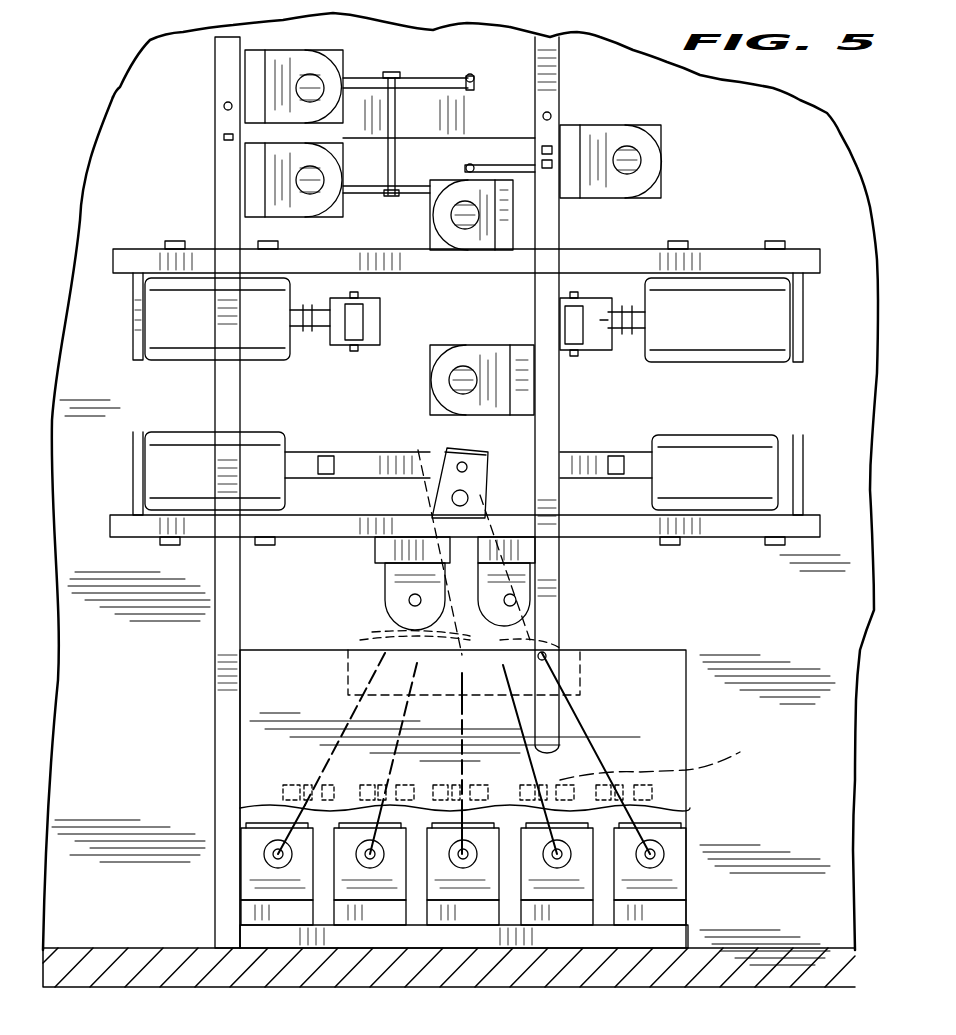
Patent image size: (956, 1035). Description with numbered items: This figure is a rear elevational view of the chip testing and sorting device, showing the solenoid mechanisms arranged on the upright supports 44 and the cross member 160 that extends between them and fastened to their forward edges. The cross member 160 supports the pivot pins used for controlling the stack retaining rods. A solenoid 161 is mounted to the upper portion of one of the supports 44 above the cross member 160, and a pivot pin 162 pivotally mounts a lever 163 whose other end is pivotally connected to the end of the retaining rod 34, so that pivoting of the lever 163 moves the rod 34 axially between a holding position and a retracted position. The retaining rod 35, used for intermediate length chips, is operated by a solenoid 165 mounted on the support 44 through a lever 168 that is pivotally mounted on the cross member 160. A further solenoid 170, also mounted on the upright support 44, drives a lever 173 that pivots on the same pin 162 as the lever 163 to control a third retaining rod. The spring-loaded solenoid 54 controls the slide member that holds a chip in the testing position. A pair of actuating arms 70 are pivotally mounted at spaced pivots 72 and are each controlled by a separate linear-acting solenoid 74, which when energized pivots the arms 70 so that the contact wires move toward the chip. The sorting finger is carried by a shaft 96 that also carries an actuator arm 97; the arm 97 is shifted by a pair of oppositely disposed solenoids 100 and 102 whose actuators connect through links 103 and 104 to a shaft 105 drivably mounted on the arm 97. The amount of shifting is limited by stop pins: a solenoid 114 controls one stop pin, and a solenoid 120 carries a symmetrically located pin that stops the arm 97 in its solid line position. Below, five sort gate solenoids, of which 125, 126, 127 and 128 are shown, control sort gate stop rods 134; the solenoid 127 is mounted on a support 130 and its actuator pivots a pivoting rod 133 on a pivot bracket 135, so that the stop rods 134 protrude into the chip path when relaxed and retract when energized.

The stack retaining rod 34 is at (472, 76).
The retaining rod 35 is at (465, 169).
The upright supports 44 is at (228, 693).
The solenoid 54 is at (449, 381).
The actuating arms 70 is at (378, 320).
The pivots 72 is at (172, 326).
The solenoid 74 is at (755, 322).
The shaft 96 is at (469, 498).
The actuator arm 97 is at (440, 502).
The solenoid 100 is at (722, 450).
The solenoid 102 is at (186, 440).
The link 103 is at (576, 470).
The link 104 is at (376, 452).
The shaft 105 is at (455, 464).
The solenoid 114 is at (500, 590).
The solenoid 120 is at (385, 593).
The sort gate solenoid 125 is at (262, 870).
The sort gate solenoid 126 is at (382, 890).
The sort gate solenoid 127 is at (480, 890).
The sort gate solenoid 128 is at (578, 890).
The support 130 is at (664, 868).
The pivoting rod 133 is at (466, 778).
The sort gate stop rods 134 is at (392, 640).
The pivot bracket 135 is at (688, 770).
The cross member 160 is at (508, 108).
The solenoid 161 is at (296, 66).
The pivot pin 162 is at (396, 72).
The lever 163 is at (362, 78).
The solenoid 165 is at (650, 168).
The lever 168 is at (520, 176).
The solenoid 170 is at (280, 174).
The lever 173 is at (366, 196).